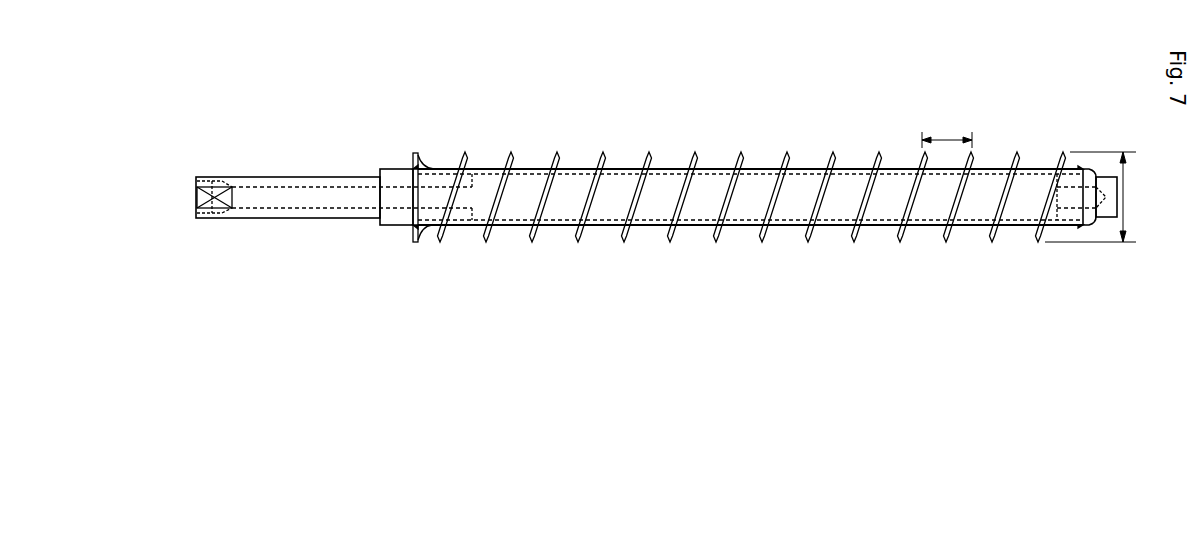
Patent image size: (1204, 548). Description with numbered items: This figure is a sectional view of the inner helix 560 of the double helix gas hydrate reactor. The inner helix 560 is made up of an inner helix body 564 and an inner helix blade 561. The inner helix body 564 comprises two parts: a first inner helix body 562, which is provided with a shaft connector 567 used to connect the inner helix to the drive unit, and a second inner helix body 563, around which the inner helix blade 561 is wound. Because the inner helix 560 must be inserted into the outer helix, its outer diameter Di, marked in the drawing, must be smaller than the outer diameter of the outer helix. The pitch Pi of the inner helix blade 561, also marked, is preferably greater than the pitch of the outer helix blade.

The inner helix 560 is at (227, 72).
The inner helix blade 561 is at (492, 237).
The first inner helix body 562 is at (313, 198).
The second inner helix body 563 is at (432, 212).
The inner helix body 564 is at (433, 308).
The shaft connector 567 is at (196, 192).